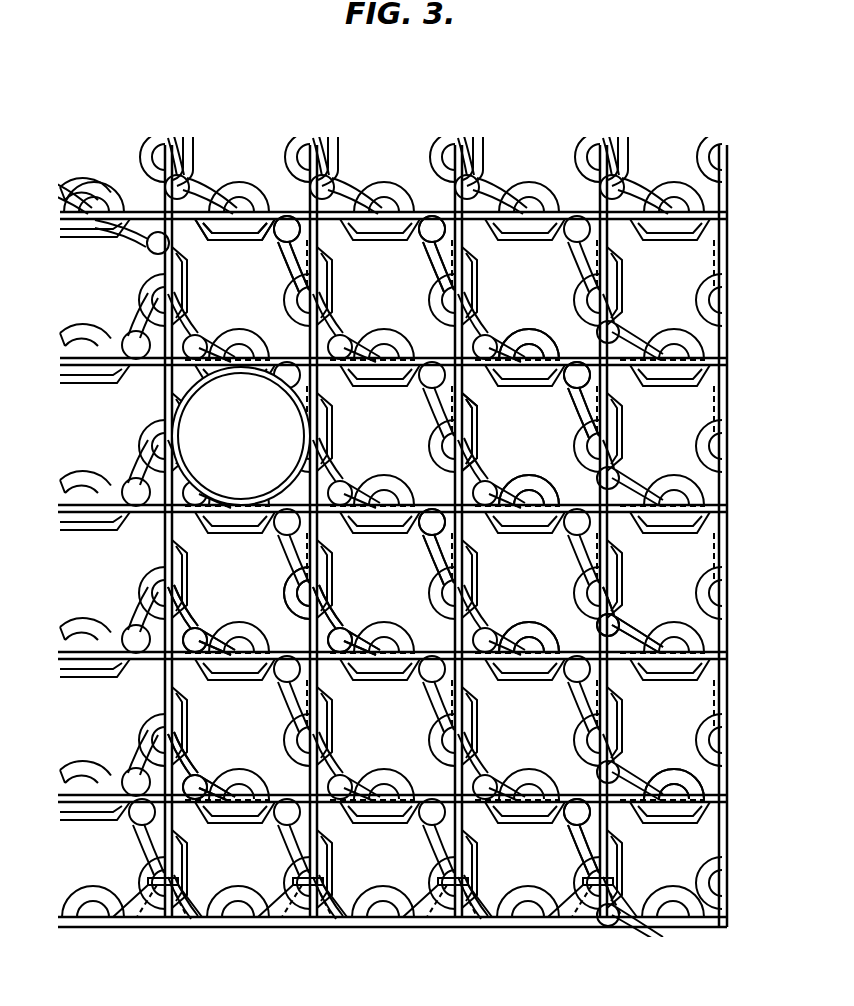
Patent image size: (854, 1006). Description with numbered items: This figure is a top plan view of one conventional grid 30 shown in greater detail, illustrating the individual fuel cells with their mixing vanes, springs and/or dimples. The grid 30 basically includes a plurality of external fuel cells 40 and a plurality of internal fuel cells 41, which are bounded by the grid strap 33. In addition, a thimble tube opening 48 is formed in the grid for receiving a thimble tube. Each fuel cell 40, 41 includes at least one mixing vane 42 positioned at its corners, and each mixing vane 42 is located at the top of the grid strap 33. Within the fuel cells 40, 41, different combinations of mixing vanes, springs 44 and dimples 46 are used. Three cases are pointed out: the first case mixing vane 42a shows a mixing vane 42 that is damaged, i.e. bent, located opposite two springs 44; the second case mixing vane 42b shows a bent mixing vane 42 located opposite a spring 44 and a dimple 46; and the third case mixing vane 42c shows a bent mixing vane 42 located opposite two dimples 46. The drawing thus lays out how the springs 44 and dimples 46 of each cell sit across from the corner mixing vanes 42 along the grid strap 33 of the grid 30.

The grid 30 is at (623, 86).
The grid strap 33 is at (730, 441).
The external fuel cell 40 is at (678, 263).
The internal fuel cell 41 is at (105, 590).
The mixing vane 42 is at (426, 240).
The first case mixing vane 42a is at (200, 546).
The second case mixing vane 42b is at (572, 405).
The third case mixing vane 42c is at (293, 318).
The spring 44 is at (544, 332).
The dimple 46 is at (246, 240).
The thimble tube opening 48 is at (190, 434).